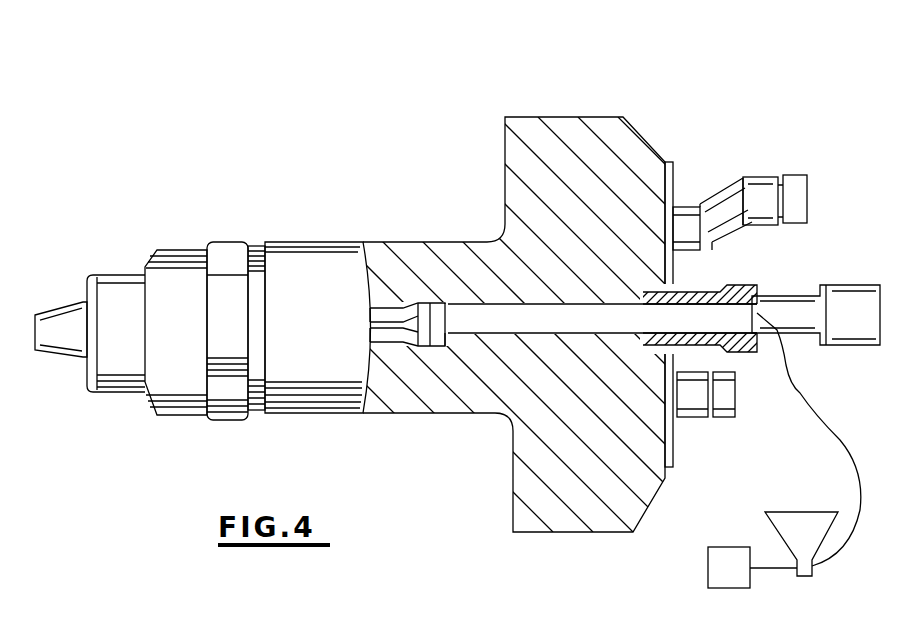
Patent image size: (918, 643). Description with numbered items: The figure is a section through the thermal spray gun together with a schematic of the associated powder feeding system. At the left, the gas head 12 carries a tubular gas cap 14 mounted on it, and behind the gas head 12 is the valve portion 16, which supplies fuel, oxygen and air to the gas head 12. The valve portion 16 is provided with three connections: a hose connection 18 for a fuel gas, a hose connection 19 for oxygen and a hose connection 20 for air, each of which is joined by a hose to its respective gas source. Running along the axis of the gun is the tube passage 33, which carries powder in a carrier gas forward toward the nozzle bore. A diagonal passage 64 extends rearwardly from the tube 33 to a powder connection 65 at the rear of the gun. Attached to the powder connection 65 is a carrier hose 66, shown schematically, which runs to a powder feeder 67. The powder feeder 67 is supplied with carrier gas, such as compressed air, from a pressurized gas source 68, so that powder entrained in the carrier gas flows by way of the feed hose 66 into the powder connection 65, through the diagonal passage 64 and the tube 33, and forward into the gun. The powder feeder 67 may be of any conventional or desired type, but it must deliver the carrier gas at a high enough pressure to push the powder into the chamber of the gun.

The gas head 12 is at (296, 238).
The gas cap 14 is at (53, 310).
The valve portion 16 is at (547, 112).
The hose connection 18 is at (728, 420).
The hose connection 19 is at (852, 290).
The hose connection 20 is at (794, 174).
The tube passage 33 is at (457, 322).
The diagonal passage 64 is at (114, 272).
The powder connection 65 is at (752, 290).
The carrier hose 66 is at (818, 423).
The powder feeder 67 is at (815, 540).
The pressurized gas source 68 is at (742, 578).